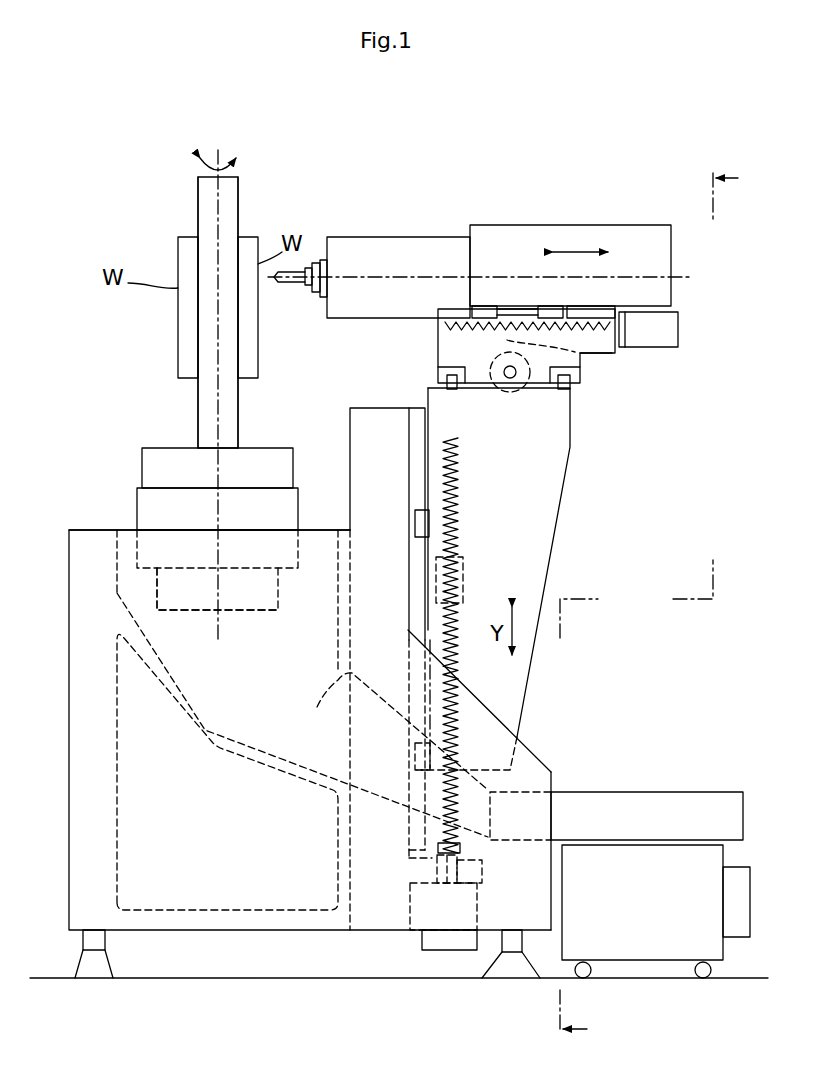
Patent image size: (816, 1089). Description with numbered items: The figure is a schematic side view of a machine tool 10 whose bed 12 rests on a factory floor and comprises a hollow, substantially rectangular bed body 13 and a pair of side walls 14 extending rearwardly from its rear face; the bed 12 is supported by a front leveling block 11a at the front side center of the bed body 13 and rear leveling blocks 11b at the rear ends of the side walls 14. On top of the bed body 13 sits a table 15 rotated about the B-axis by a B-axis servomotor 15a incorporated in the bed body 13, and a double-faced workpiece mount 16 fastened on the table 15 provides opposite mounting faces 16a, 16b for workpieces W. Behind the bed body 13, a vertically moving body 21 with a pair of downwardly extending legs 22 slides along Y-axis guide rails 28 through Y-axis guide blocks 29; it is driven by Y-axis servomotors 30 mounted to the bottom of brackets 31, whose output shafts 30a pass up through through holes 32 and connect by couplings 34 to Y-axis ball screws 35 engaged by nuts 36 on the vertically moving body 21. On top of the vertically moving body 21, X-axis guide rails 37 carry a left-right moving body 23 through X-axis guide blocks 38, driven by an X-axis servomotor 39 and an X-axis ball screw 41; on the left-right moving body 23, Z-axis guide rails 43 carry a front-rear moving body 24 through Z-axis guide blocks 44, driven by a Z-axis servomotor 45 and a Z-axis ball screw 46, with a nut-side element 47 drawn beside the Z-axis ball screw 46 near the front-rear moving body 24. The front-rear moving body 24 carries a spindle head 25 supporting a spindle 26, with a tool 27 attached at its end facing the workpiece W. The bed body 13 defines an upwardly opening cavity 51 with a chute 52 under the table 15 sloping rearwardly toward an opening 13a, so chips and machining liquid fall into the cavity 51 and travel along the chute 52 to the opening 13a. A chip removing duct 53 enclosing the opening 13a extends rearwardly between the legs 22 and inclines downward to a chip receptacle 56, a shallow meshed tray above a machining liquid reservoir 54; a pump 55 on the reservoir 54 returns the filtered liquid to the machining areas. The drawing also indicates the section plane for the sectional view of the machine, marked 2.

The machine tool 10 is at (553, 123).
The front leveling block 11a is at (93, 980).
The rear leveling block 11b is at (512, 980).
The bed 12 is at (72, 522).
The bed body 13 is at (72, 606).
The opening 13a is at (337, 683).
The side wall 14 is at (545, 774).
The table 15 is at (137, 507).
The B-axis servomotor 15a is at (250, 592).
The double-faced workpiece mount 16 is at (268, 155).
The mounting face 16a is at (198, 210).
The mounting face 16b is at (238, 210).
The vertically moving body 21 is at (565, 444).
The leg 22 is at (510, 713).
The left-right moving body 23 is at (438, 338).
The front-rear moving body 24 is at (621, 242).
The spindle head 25 is at (413, 244).
The spindle 26 is at (319, 262).
The tool 27 is at (291, 284).
The Y-axis guide rail 28 is at (411, 410).
The Y-axis guide block 29 is at (415, 524).
The Y-axis servomotor 30 is at (462, 946).
The output shaft 30a is at (440, 868).
The bracket 31 is at (483, 876).
The through hole 32 is at (447, 880).
The coupling 34 is at (462, 848).
The Y-axis ball screw 35 is at (455, 480).
The nut 36 is at (463, 575).
The X-axis guide rail 37 is at (452, 392).
The X-axis guide block 38 is at (440, 377).
The X-axis servomotor 39 is at (510, 392).
The X-axis ball screw 41 is at (516, 378).
The Z-axis guide rail 43 is at (578, 312).
The Z-axis guide block 44 is at (548, 306).
The Z-axis servomotor 45 is at (645, 331).
The Z-axis ball screw 46 is at (598, 333).
The nut 47 is at (578, 362).
The cavity 51 is at (300, 625).
The chute 52 is at (192, 698).
The chip removing duct 53 is at (372, 797).
The machining liquid reservoir 54 is at (647, 944).
The pump 55 is at (737, 927).
The chip receptacle 56 is at (656, 792).
The section line 2 is at (658, 606).